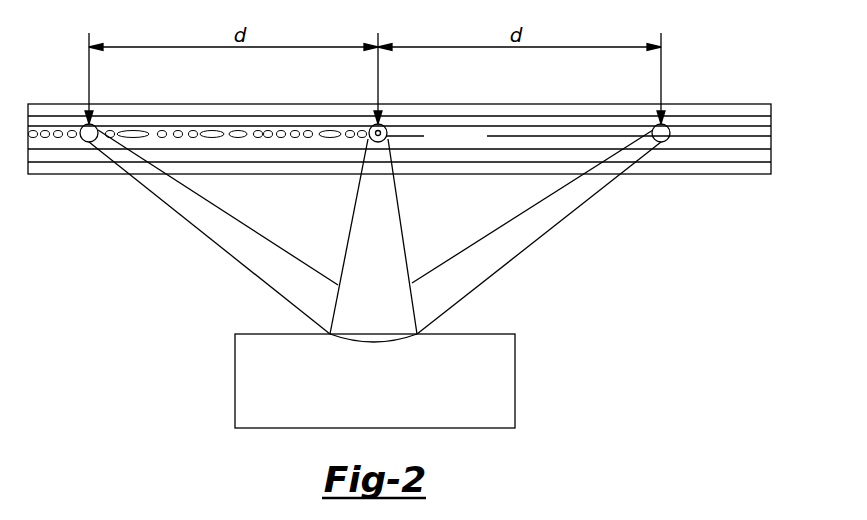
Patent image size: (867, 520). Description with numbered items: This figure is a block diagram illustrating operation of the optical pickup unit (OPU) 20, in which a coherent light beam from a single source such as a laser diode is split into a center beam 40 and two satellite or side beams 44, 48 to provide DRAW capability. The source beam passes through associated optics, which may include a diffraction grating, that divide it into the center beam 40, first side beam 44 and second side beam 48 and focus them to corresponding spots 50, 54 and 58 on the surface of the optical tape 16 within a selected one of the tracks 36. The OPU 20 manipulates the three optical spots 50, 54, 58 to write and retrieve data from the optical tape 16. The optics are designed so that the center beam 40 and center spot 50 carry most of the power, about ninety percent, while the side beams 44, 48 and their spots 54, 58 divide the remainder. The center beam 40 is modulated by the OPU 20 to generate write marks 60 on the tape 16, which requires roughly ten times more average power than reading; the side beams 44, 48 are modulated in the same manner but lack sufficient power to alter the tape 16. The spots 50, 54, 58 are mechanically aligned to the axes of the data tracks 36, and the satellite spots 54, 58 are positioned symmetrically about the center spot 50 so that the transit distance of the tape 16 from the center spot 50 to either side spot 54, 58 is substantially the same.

The optical tape 16 is at (730, 104).
The tracks 36 is at (784, 119).
The write marks 60 is at (327, 118).
The center spot 50 is at (387, 134).
The first side spot 54 is at (88, 143).
The second side spot 58 is at (663, 143).
The center beam 40 is at (413, 212).
The first side beam 44 is at (228, 273).
The second side beam 48 is at (526, 276).
The optical pickup unit (OPU) 20 is at (516, 381).